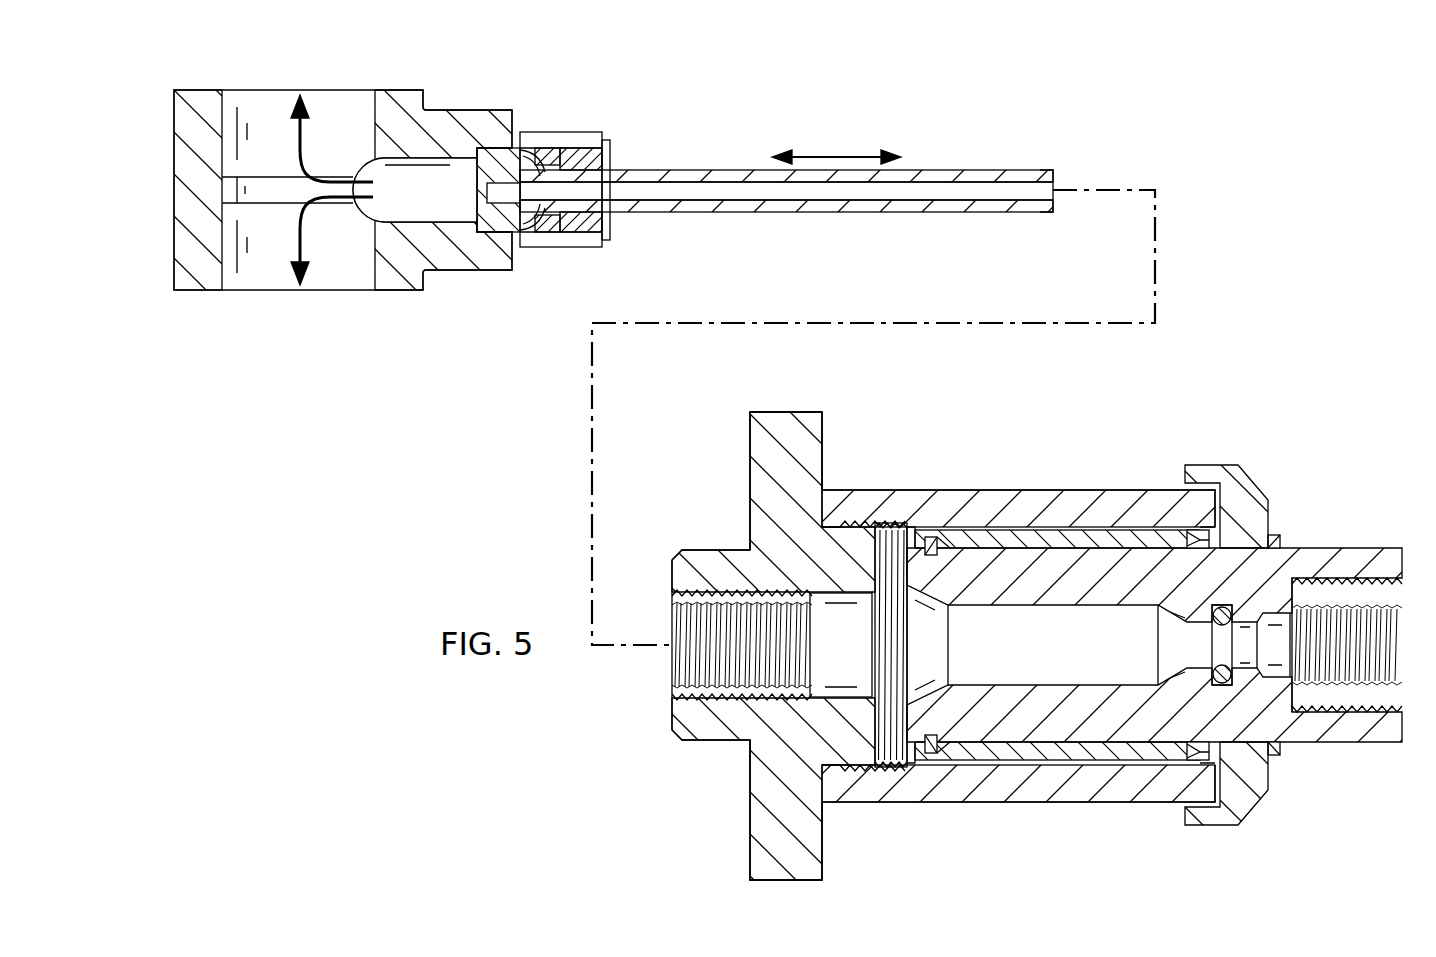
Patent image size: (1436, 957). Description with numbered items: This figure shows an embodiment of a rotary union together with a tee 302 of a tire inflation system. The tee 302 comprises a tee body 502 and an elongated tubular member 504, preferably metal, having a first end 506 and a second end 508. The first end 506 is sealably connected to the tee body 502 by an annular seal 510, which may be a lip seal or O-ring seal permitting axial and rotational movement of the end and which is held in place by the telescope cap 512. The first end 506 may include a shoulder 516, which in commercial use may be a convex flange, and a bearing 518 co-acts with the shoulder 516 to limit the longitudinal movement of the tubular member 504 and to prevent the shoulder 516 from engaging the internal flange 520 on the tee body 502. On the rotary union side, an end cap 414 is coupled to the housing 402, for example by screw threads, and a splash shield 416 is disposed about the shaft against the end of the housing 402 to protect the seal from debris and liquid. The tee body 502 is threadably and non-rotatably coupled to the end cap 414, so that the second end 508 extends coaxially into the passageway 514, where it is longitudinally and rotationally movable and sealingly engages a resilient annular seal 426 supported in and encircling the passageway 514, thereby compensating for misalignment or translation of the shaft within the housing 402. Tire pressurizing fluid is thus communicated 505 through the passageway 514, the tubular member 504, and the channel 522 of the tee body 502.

The tee 302 is at (292, 409).
The housing 402 is at (1000, 803).
The end cap 414 is at (783, 411).
The splash shield 416 is at (1270, 516).
The annular seal 426 is at (1222, 623).
The tee body 502 is at (383, 90).
The elongated tubular member 504 is at (773, 212).
The fluid communication 505 is at (840, 147).
The first end 506 is at (555, 234).
The second end 508 is at (986, 170).
The annular seal 510 is at (558, 135).
The telescope cap 512 is at (612, 153).
The passageway 514 is at (1028, 662).
The shoulder 516 is at (524, 150).
The bearing 518 is at (505, 224).
The internal flange 520 is at (478, 171).
The channel 522 is at (397, 207).